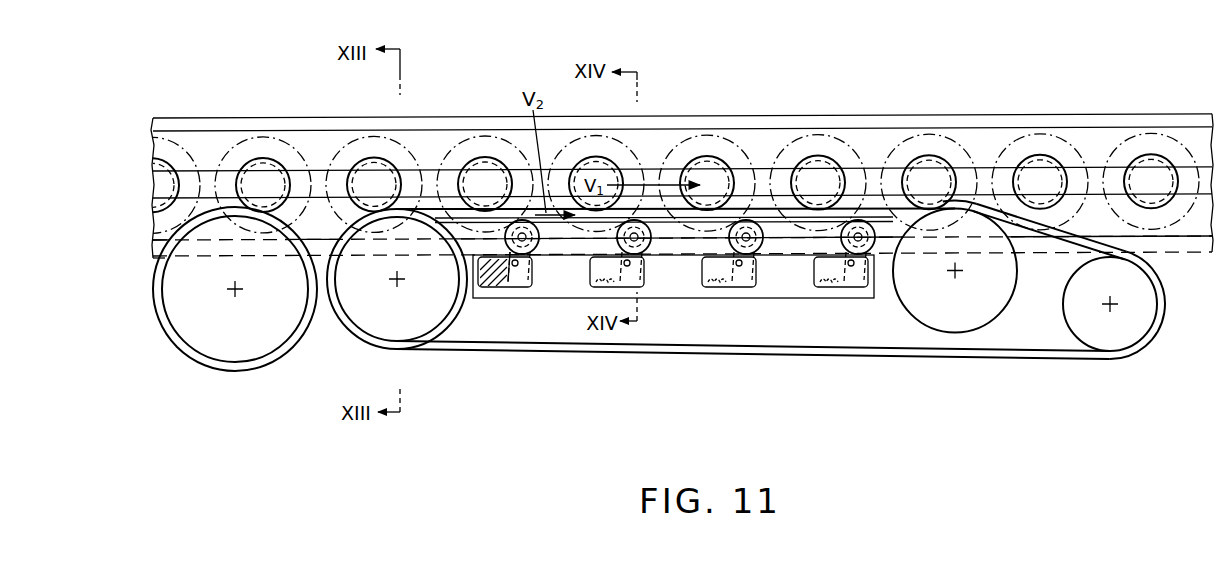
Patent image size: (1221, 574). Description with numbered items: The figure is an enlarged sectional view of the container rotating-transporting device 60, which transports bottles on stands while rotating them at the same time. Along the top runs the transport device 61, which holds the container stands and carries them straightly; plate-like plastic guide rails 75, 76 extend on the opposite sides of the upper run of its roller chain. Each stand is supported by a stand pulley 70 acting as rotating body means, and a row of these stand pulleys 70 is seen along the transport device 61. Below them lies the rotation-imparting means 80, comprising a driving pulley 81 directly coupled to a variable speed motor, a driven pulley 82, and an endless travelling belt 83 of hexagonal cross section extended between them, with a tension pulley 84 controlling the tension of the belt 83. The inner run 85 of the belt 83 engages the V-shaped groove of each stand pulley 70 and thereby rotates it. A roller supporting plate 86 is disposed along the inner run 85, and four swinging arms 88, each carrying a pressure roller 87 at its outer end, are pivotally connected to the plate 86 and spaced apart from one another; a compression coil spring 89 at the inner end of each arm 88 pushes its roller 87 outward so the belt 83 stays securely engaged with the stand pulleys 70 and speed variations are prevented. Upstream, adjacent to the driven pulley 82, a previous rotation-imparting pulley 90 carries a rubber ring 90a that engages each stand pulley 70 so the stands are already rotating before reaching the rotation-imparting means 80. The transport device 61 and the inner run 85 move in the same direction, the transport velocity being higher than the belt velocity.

The container rotating-transporting device 60 is at (806, 110).
The transport device 61 is at (654, 142).
The stand pulley 70 is at (276, 171).
The guide rail 75 is at (1190, 232).
The guide rail 76 is at (1188, 132).
The rotation-imparting means 80 is at (936, 362).
The driving pulley 81 is at (1077, 316).
The driven pulley 82 is at (362, 316).
The travelling belt 83 is at (669, 353).
The tension pulley 84 is at (902, 291).
The inner run 85 is at (659, 225).
The roller supporting plate 86 is at (813, 291).
The pressure roller 87 is at (534, 243).
The swinging arm 88 is at (513, 285).
The compression coil spring 89 is at (497, 284).
The previous rotation-imparting pulley 90 is at (264, 348).
The rubber ring 90a is at (192, 356).